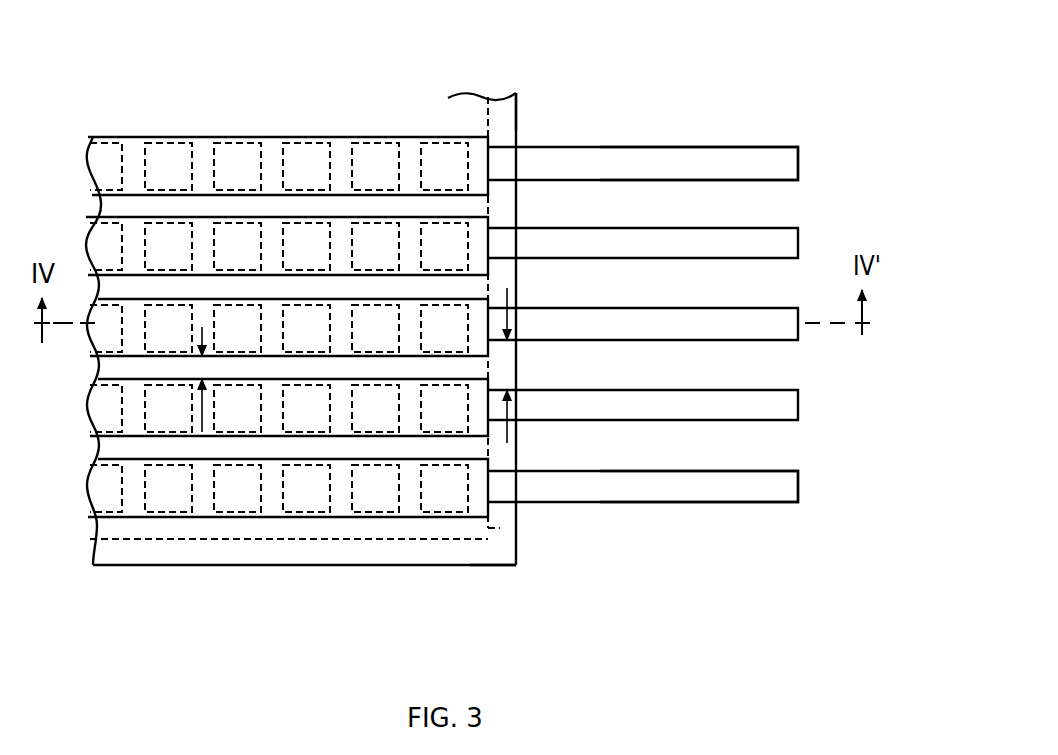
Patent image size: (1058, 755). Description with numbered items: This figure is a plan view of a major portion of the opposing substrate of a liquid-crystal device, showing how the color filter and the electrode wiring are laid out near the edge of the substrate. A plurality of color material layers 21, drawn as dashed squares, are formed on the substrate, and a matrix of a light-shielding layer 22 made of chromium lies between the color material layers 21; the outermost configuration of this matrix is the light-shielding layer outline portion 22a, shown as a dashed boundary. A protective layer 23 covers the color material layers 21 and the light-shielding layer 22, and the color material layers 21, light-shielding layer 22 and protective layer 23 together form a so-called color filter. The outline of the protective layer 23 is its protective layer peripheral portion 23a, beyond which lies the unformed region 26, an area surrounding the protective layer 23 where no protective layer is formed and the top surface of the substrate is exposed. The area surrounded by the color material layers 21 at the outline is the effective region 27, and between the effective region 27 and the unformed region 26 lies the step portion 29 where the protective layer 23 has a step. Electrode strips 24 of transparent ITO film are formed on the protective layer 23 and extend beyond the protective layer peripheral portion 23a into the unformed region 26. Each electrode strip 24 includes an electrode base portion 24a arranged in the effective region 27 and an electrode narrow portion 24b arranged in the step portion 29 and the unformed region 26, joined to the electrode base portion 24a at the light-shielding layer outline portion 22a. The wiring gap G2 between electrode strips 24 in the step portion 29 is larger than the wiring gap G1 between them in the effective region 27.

The color material layer 21 is at (232, 162).
The light-shielding layer 22 is at (437, 537).
The light-shielding layer outline portion 22a is at (516, 530).
The protective layer 23 is at (495, 102).
The protective layer peripheral portion 23a is at (516, 118).
The electrode strip 24 is at (705, 145).
The electrode base portion 24a is at (307, 137).
The electrode narrow portion 24b is at (622, 147).
The unformed region of the protective layer 26 is at (780, 85).
The effective region 27 is at (383, 113).
The step portion of the protective layer 29 is at (498, 575).
The wiring gap G1 is at (202, 373).
The wiring gap G2 is at (507, 367).